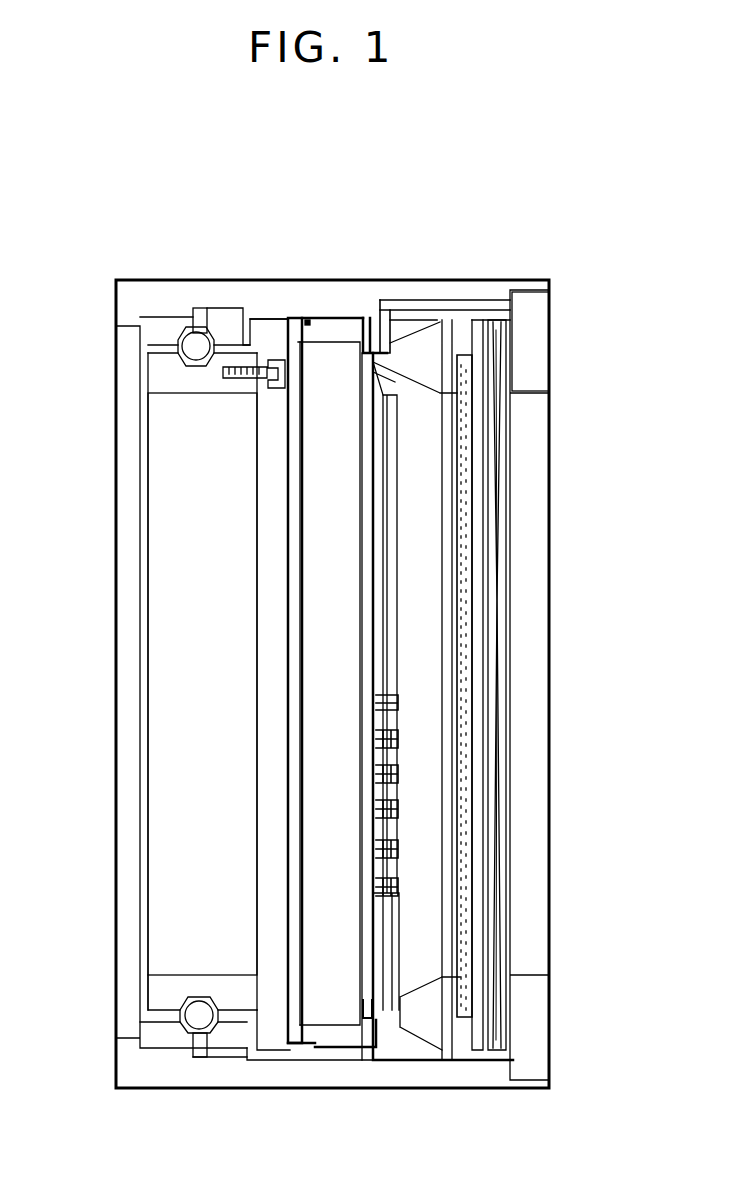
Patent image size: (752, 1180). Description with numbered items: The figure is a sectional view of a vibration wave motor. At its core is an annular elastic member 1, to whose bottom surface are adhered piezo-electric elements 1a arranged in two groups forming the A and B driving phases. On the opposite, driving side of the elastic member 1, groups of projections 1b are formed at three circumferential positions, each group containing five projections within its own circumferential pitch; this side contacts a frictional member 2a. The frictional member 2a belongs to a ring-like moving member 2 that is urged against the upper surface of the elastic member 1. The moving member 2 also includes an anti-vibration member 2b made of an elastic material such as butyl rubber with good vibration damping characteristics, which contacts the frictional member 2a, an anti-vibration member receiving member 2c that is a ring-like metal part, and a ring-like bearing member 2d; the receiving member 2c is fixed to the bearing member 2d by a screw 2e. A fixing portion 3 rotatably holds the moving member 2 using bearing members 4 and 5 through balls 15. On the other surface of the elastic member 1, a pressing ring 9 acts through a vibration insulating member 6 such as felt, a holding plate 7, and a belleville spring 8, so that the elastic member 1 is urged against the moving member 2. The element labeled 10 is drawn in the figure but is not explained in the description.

The elastic member 1 is at (430, 333).
The piezo-electric elements 1a is at (478, 330).
The projections 1b is at (410, 372).
The moving member 2 is at (348, 204).
The frictional member 2a is at (338, 330).
The anti-vibration member 2b is at (292, 330).
The anti-vibration member receiving member 2c is at (263, 327).
The bearing member 2d is at (158, 375).
The screw 2e is at (230, 374).
The fixing portion 3 is at (223, 288).
The bearing member 4 is at (158, 325).
The bearing member 5 is at (210, 320).
The vibration insulating member 6 is at (467, 438).
The holding plate 7 is at (495, 288).
The belleville spring 8 is at (500, 402).
The pressing ring 9 is at (544, 345).
The hook 10 is at (372, 333).
The balls 15 is at (192, 1022).